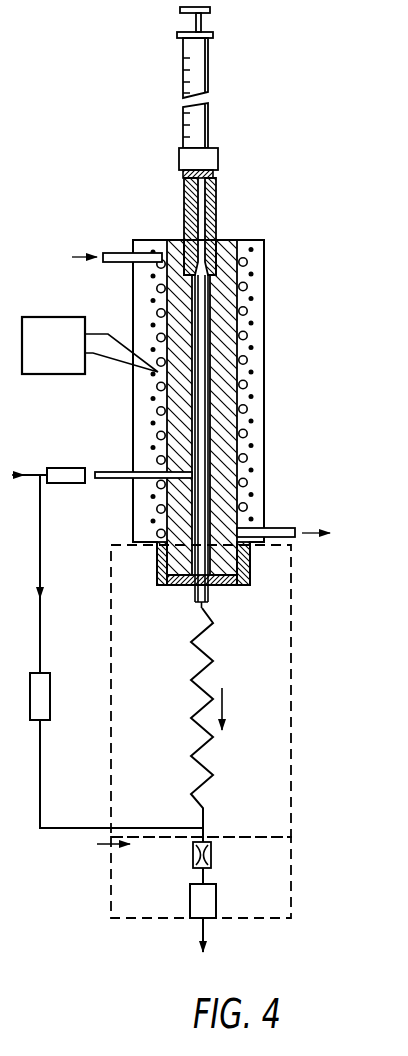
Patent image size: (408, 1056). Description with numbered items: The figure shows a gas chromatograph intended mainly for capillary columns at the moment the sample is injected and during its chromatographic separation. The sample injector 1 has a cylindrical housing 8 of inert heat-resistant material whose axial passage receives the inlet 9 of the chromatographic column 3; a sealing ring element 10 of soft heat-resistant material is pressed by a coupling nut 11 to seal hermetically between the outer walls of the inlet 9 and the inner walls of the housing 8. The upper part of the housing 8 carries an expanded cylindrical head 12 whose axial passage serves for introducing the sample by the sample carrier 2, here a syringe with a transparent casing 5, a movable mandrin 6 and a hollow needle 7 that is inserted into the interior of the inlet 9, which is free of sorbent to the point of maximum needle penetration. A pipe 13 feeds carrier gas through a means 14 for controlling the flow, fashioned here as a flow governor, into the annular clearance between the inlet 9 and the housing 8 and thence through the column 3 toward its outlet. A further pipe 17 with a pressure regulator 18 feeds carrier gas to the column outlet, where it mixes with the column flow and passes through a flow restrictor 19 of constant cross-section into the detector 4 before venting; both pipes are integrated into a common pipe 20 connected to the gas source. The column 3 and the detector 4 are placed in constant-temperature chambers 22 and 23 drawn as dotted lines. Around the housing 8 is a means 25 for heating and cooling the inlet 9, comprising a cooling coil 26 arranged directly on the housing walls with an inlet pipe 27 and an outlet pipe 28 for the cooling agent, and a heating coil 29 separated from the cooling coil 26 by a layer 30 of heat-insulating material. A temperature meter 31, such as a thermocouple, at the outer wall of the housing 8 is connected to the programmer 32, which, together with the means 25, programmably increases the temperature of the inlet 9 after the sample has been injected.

The sample injector 1 is at (239, 237).
The sample carrier 2 is at (188, 87).
The chromatographic column 3 is at (195, 699).
The detector 4 is at (220, 897).
The casing 5 is at (208, 125).
The mandrin 6 is at (203, 27).
The hollow needle 7 is at (203, 390).
The housing 8 is at (244, 472).
The inlet 9 is at (184, 588).
The sealing ring element 10 is at (214, 592).
The coupling nut 11 is at (157, 571).
The expanded cylindrical head 12 is at (186, 214).
The pipe for feeding a carrier gas 13 is at (112, 478).
The means for controlling the flow of the carrier gas 14 is at (68, 468).
The pipe for feeding the carrier gas 17 is at (38, 753).
The pressure regulator 18 is at (50, 690).
The flow restrictor 19 is at (207, 838).
The common pipe for feeding the carrier gas 20 is at (35, 477).
The constant-temperature chamber 22 is at (295, 650).
The constant-temperature chamber 23 is at (219, 176).
The means for heating and cooling 25 is at (265, 345).
The cooling coil 26 is at (244, 318).
The inlet pipe 27 is at (121, 253).
The outlet pipe 28 is at (287, 526).
The heating coil 29 is at (252, 275).
The layer of heat-insulating material 30 is at (262, 420).
The temperature meter 31 is at (160, 370).
The programmer 32 is at (90, 345).